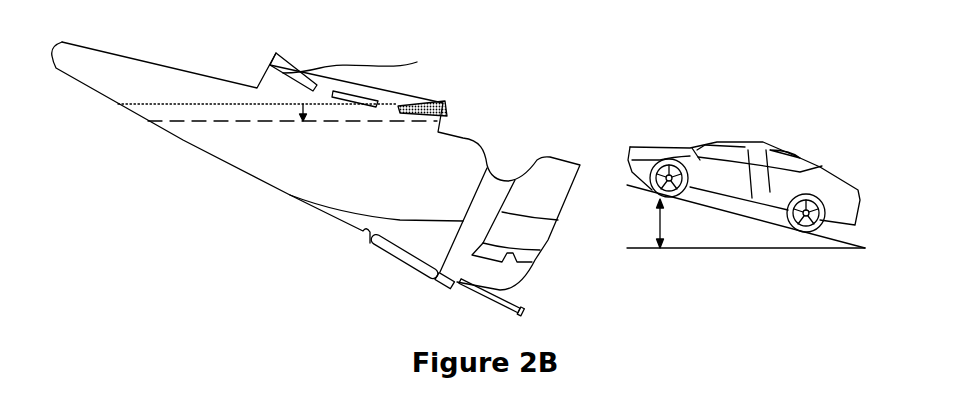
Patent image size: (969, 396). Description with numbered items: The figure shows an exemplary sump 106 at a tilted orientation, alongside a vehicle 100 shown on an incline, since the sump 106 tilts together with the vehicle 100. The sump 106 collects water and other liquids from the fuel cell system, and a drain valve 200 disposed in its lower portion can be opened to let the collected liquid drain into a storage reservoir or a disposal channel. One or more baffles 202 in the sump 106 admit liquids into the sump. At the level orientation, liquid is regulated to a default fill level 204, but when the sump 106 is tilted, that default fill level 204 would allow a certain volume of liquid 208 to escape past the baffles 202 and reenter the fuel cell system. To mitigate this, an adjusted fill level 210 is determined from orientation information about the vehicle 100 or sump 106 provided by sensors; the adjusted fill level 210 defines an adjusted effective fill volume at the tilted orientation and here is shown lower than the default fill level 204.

The vehicle 100 is at (802, 158).
The sump 106 is at (165, 66).
The drain valve 200 is at (465, 294).
The baffles 202 is at (358, 100).
The default fill level 204 is at (198, 104).
The volume of liquid 208 is at (449, 103).
The adjusted fill level 210 is at (220, 121).